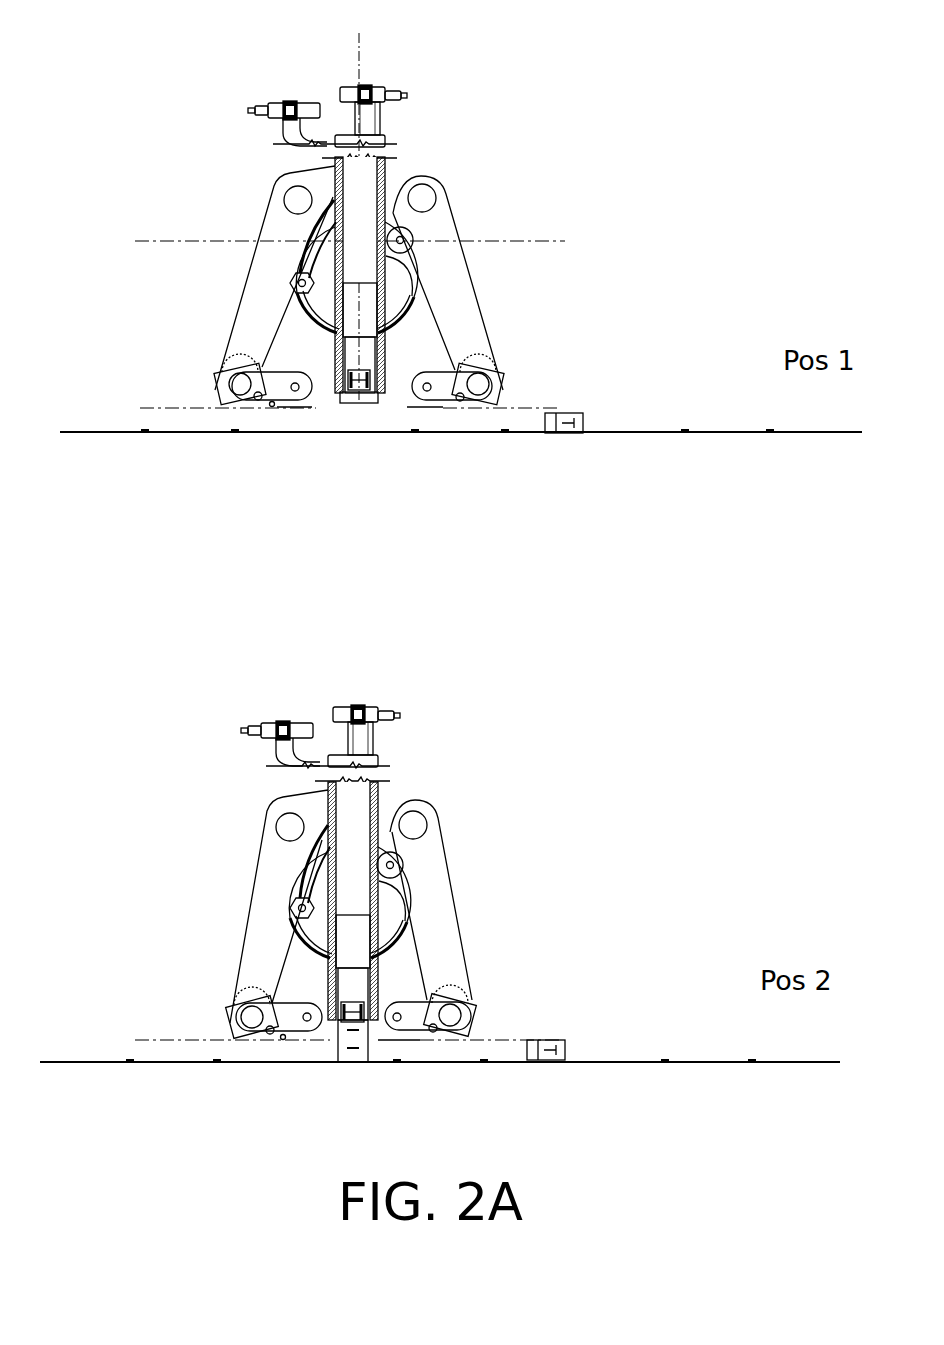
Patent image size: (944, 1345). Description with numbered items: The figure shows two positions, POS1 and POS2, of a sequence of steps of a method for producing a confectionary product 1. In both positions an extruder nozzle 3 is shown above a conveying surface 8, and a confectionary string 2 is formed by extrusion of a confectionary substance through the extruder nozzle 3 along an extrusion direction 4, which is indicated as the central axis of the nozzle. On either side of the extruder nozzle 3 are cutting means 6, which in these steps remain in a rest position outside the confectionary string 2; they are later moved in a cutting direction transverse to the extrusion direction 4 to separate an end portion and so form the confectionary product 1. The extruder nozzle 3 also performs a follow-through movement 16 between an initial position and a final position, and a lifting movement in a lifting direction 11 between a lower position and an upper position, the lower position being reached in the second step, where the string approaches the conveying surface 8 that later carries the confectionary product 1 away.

The confectionary product 1 is at (572, 413).
The confectionary string 2 is at (373, 403).
The extruder nozzle 3 is at (370, 355).
The extrusion direction 4 is at (360, 46).
The cutting means 6 is at (425, 410).
The conveying surface 8 is at (301, 432).
The lifting direction 11 is at (370, 203).
The follow-through movement 16 is at (578, 240).